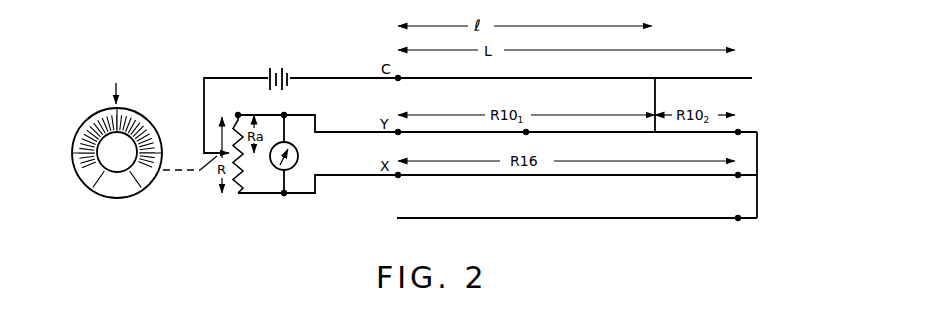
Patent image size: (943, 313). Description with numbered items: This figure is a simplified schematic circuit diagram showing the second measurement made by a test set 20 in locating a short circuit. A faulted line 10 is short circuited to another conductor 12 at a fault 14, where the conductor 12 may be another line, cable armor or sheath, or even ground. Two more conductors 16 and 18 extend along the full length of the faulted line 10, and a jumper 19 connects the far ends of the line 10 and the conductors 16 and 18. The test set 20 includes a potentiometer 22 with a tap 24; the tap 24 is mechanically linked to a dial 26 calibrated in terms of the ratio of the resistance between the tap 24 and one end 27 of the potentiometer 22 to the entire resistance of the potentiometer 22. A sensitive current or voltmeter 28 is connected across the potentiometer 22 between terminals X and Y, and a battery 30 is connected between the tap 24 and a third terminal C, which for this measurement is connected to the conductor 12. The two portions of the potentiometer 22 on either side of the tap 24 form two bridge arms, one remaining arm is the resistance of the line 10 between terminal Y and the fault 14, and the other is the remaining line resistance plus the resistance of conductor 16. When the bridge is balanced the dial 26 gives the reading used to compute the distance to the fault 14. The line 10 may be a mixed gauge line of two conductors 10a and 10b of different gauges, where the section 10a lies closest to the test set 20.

The faulted line 10 is at (723, 130).
The first conductor of mixed gauge line 10a is at (493, 135).
The second conductor of mixed gauge line 10b is at (620, 135).
The conductor 12 is at (743, 78).
The short circuit fault 14 is at (655, 96).
The conductor 16 is at (602, 177).
The conductor 18 is at (620, 220).
The jumper 19 is at (758, 200).
The test set 20 is at (283, 207).
The potentiometer 22 is at (238, 190).
The tap 24 is at (217, 154).
The dial 26 is at (117, 196).
The end of potentiometer 27 is at (238, 112).
The current or voltmeter 28 is at (298, 157).
The battery 30 is at (278, 65).